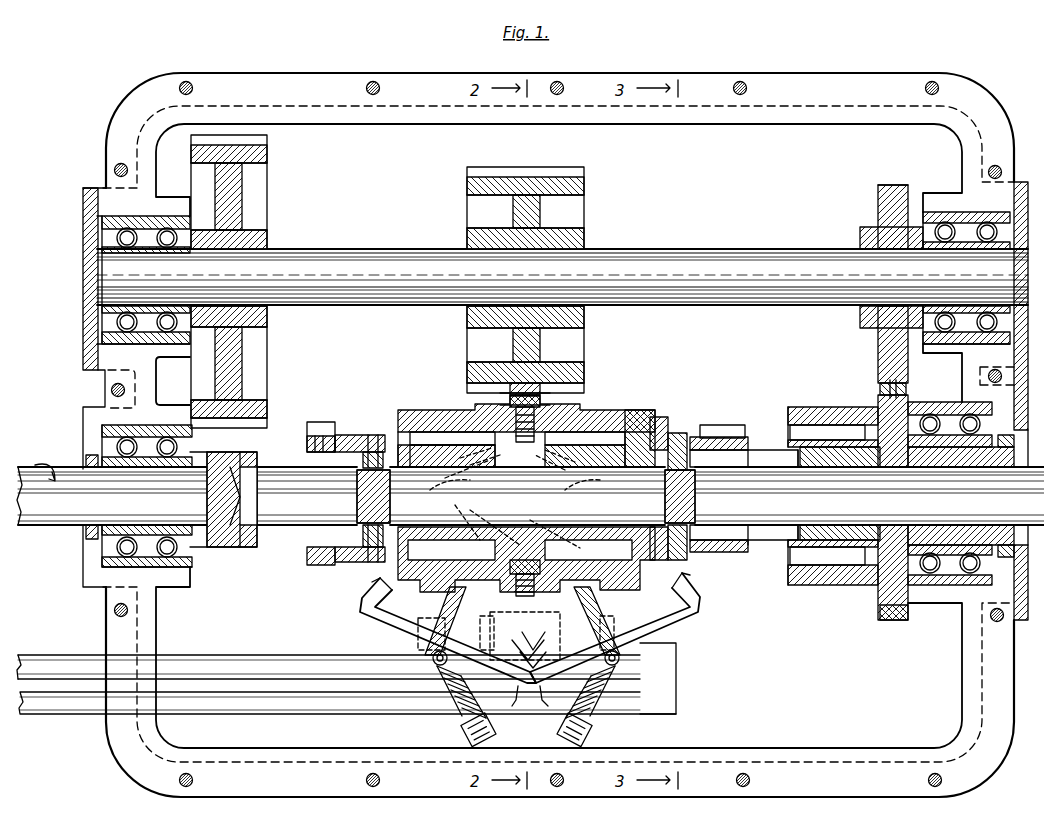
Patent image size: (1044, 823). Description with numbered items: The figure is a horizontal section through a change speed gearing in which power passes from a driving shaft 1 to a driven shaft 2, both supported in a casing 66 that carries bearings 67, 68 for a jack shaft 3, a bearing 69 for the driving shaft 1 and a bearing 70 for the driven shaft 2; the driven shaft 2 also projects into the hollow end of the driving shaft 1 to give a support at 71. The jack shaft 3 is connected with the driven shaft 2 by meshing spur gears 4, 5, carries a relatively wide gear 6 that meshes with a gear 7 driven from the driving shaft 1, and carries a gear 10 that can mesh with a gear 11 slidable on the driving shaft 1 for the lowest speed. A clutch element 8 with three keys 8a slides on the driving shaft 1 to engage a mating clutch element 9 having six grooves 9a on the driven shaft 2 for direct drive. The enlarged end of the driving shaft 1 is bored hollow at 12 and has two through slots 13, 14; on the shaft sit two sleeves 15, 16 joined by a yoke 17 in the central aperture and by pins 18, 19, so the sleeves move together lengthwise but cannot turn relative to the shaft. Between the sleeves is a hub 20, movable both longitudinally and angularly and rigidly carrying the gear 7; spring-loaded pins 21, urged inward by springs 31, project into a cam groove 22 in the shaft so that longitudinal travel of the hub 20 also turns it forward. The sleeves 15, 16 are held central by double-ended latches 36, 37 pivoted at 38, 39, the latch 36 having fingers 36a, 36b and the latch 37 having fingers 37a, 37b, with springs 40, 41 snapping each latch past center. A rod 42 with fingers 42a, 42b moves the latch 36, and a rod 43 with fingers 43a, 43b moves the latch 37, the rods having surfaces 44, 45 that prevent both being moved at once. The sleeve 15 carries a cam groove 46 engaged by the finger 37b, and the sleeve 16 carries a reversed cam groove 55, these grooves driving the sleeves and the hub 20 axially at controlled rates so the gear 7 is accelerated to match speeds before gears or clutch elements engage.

The driving shaft 1 is at (58, 512).
The driven shaft 2 is at (650, 496).
The jack shaft 3 is at (752, 258).
The spur gear 4 is at (872, 330).
The spur gear 5 is at (878, 378).
The wide gear 6 is at (583, 181).
The gear 7 is at (552, 410).
The clutch element 8 is at (745, 446).
The keys 8a is at (735, 428).
The mating clutch element 9 is at (827, 572).
The grooves 9a is at (812, 428).
The gear 10 is at (256, 150).
The gear 11 is at (333, 430).
The hollow bore 12 is at (765, 507).
The slot 13 is at (273, 448).
The slot 14 is at (763, 450).
The sleeve 15 is at (367, 430).
The sleeve 16 is at (668, 430).
The yoke 17 is at (686, 492).
The pin 18 is at (368, 460).
The pin 19 is at (688, 537).
The hub 20 is at (660, 410).
The pins 21 is at (475, 457).
The cam groove 22 is at (567, 470).
The springs 31 is at (492, 398).
The latch 36 is at (366, 610).
The finger 36a is at (380, 580).
The finger 36b is at (540, 646).
The latch 37 is at (700, 605).
The finger 37a is at (680, 576).
The finger 37b is at (525, 645).
The pivot 38 is at (456, 598).
The pivot 39 is at (580, 597).
The spring 40 is at (458, 712).
The spring 41 is at (610, 712).
The rod 42 is at (212, 657).
The finger 42a is at (418, 640).
The finger 42b is at (486, 622).
The rod 43 is at (262, 702).
The finger 43a is at (604, 600).
The finger 43b is at (648, 645).
The surface 44 is at (515, 704).
The surface 45 is at (545, 704).
The cam groove 46 is at (488, 412).
The cam groove 55 is at (627, 408).
The casing 66 is at (825, 110).
The bearing 67 is at (112, 240).
The bearing 68 is at (948, 228).
The bearing 69 is at (108, 447).
The bearing 70 is at (932, 580).
The shaft support 71 is at (860, 522).